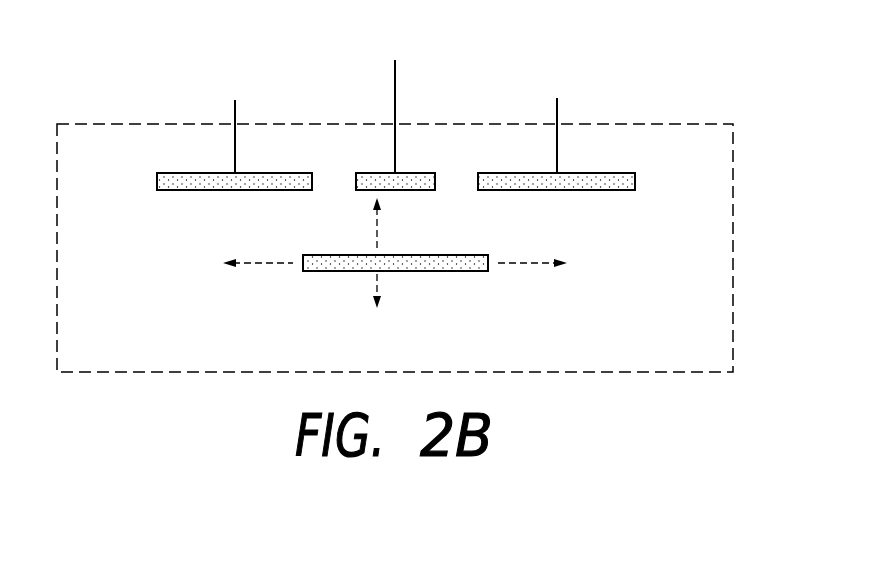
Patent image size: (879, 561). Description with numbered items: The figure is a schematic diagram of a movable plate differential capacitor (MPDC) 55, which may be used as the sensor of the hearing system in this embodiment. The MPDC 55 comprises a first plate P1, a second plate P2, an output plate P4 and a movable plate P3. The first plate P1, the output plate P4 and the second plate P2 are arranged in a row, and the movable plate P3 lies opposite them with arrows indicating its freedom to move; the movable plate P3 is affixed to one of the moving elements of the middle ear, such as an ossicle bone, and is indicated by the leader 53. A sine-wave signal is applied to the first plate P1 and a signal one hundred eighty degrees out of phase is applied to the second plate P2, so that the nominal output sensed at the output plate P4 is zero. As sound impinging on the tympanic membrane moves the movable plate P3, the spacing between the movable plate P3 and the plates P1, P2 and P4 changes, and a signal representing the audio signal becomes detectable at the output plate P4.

The movable plate differential capacitor 55 is at (690, 124).
The movable plate P3 53 is at (395, 281).
The first plate P1 is at (234, 127).
The second plate P2 is at (556, 127).
The movable plate P3 is at (393, 281).
The output plate P4 is at (395, 103).